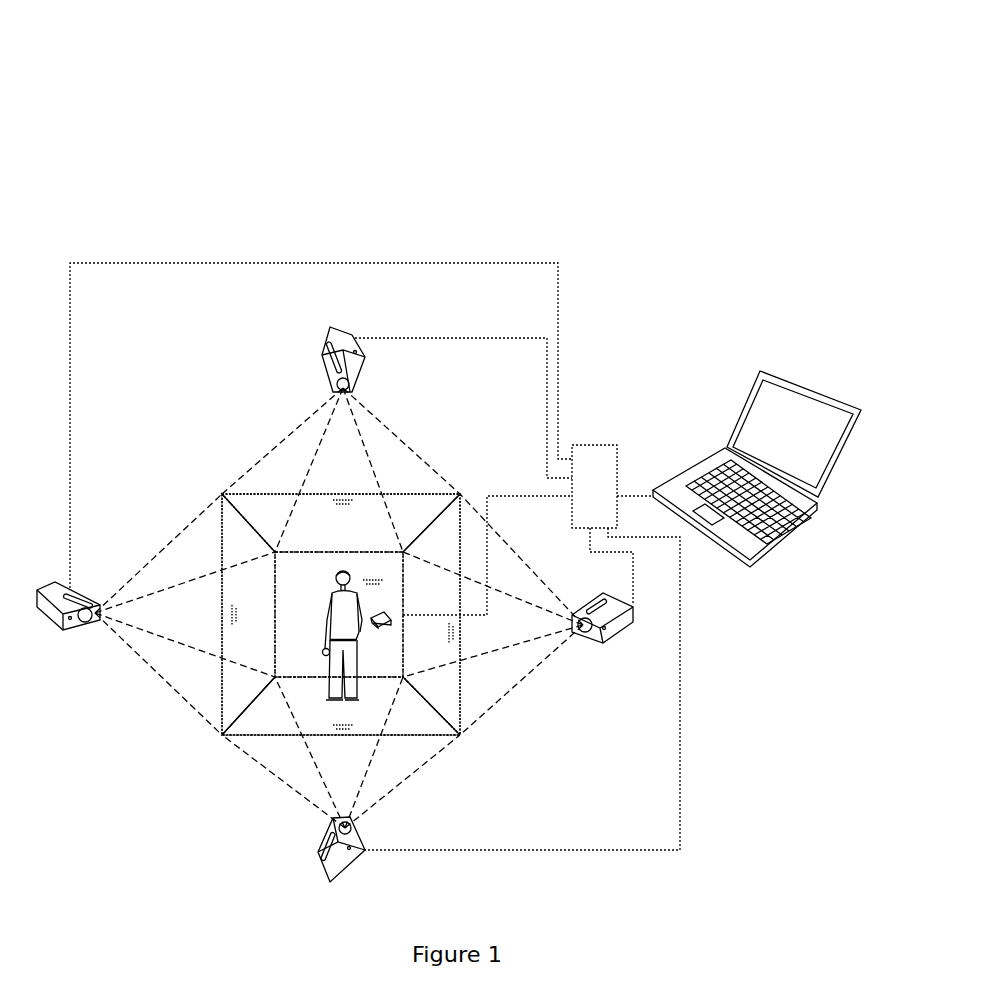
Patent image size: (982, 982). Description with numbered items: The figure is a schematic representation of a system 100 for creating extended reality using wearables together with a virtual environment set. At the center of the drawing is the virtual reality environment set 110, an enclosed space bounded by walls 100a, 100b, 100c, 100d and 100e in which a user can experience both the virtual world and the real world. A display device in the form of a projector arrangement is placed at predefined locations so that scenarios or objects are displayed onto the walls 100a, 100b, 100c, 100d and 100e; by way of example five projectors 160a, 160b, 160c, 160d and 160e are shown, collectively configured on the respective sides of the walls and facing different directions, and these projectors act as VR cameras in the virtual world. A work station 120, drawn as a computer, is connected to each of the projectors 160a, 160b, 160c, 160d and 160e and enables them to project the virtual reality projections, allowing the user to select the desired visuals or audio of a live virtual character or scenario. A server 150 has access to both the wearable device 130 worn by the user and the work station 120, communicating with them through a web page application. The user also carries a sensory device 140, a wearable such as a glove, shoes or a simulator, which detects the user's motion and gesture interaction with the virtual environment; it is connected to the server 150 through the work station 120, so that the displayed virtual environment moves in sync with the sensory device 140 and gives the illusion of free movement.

The system 100 is at (657, 243).
The virtual reality environment set 110 is at (298, 565).
The wall 100a is at (341, 523).
The wall 100b is at (431, 614).
The wall 100c is at (341, 707).
The wall 100d is at (249, 614).
The wall 100e is at (339, 614).
The workstation 120 is at (830, 480).
The wearable device 130 is at (337, 576).
The sensory device 140 is at (331, 651).
The server 150 is at (593, 445).
The projector 160a is at (365, 360).
The projector 160b is at (618, 637).
The projector 160c is at (322, 840).
The projector 160d is at (52, 622).
The projector 160e is at (384, 628).